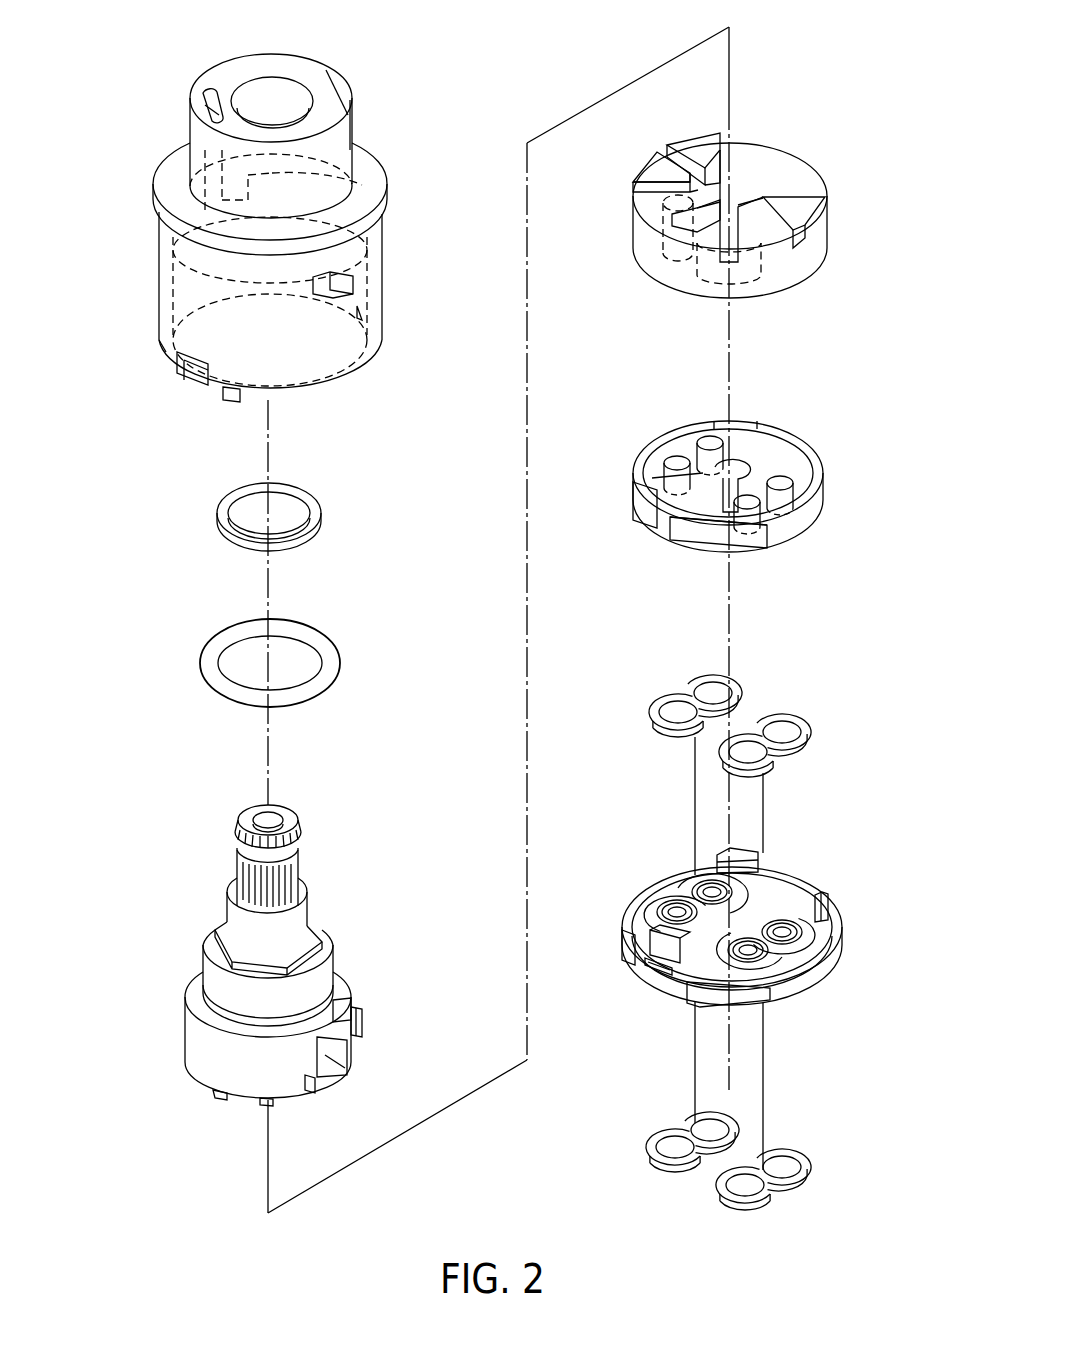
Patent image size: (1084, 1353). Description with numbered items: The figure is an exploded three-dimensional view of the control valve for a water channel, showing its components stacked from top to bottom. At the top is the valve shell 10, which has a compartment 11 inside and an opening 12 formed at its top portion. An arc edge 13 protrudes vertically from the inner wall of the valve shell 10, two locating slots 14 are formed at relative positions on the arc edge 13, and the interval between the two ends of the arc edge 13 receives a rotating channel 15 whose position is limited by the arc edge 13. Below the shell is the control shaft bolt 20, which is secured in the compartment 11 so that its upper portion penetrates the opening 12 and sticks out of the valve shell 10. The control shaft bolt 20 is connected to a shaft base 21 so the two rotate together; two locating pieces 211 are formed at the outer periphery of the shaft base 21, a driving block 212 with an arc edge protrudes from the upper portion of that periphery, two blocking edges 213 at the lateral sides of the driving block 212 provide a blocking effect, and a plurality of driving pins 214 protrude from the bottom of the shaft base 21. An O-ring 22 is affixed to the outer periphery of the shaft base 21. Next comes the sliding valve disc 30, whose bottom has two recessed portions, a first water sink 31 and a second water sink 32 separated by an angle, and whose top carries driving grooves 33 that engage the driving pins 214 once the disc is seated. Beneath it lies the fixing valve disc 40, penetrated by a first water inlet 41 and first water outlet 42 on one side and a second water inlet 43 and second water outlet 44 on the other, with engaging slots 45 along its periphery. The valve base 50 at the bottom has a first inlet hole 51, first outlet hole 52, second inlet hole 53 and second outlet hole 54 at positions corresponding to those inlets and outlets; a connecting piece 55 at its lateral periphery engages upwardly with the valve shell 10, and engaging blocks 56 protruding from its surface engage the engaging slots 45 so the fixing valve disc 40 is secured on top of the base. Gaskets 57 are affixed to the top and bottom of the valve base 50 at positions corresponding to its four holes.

The valve shell 10 is at (398, 278).
The compartment 11 is at (354, 384).
The opening 12 is at (283, 92).
The arc edge 13 is at (158, 290).
The locating slots 14 is at (172, 149).
The rotating channel 15 is at (385, 182).
The control shaft bolt 20 is at (210, 850).
The shaft base 21 is at (194, 1032).
The locating pieces 211 is at (330, 1062).
The driving block 212 is at (348, 1012).
The blocking edges 213 is at (360, 1024).
The driving pins 214 is at (218, 1096).
The O-ring 22 is at (320, 642).
The sliding valve disc 30 is at (805, 138).
The first water sink 31 is at (660, 258).
The second water sink 32 is at (780, 275).
The driving grooves 33 is at (645, 192).
The fixing valve disc 40 is at (772, 405).
The first water inlet 41 is at (703, 440).
The first water outlet 42 is at (658, 478).
The second water inlet 43 is at (778, 479).
The second water outlet 44 is at (748, 505).
The engaging slots 45 is at (667, 543).
The valve base 50 is at (797, 852).
The first inlet hole 51 is at (705, 884).
The first outlet hole 52 is at (668, 909).
The second inlet hole 53 is at (786, 933).
The second outlet hole 54 is at (751, 951).
The base plate slot 55 is at (657, 968).
The engaging blocks 56 is at (828, 896).
The gaskets 57 is at (740, 685).